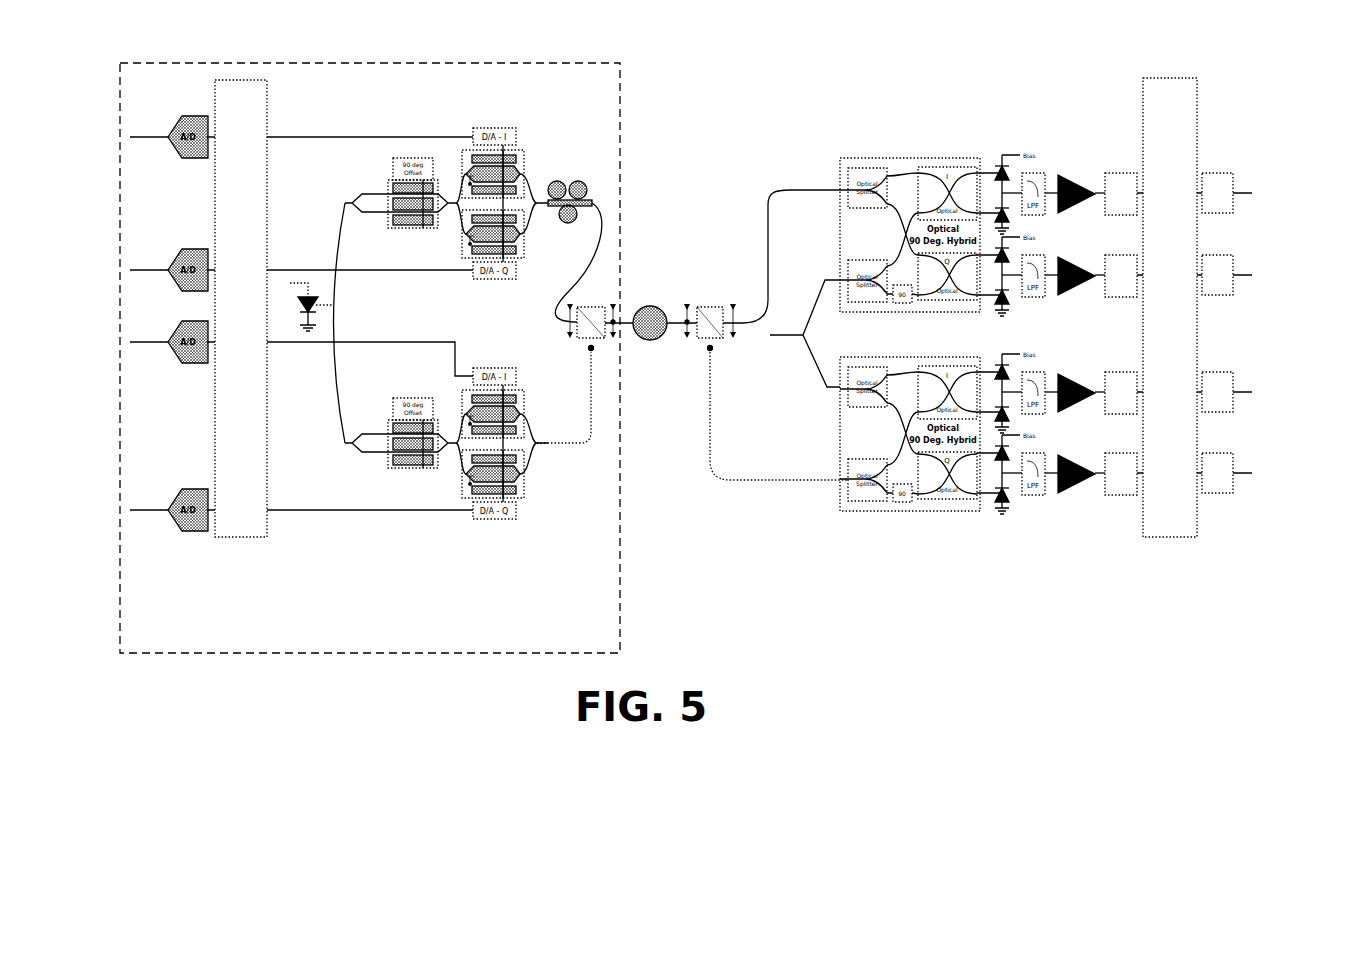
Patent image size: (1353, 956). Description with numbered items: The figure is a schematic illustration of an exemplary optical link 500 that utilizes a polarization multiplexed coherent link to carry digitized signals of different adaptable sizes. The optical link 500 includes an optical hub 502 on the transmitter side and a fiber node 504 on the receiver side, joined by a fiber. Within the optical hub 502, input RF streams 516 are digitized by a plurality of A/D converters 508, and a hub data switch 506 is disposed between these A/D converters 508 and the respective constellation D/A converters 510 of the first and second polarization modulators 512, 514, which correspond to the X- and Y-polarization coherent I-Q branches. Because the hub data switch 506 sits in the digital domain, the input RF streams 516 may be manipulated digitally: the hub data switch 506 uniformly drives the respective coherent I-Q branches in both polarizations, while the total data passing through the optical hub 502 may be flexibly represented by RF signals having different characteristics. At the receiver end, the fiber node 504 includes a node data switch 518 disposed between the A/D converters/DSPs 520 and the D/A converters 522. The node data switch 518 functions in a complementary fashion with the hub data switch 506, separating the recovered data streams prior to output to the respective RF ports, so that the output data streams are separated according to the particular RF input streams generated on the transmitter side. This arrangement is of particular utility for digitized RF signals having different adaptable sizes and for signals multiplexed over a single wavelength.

The optical link 500 is at (752, 95).
The optical hub 502 is at (563, 642).
The fiber node 504 is at (677, 568).
The hub data switch 506 is at (243, 537).
The A/D converters 508 is at (185, 100).
The constellation D/A converters 510 is at (488, 100).
The first polarization modulator 512 is at (524, 278).
The second polarization modulator 514 is at (545, 494).
The input RF streams 516 is at (151, 338).
The node data switch 518 is at (1163, 537).
The A/D converters/DSPs 520 is at (1113, 138).
The D/A converters 522 is at (1220, 132).